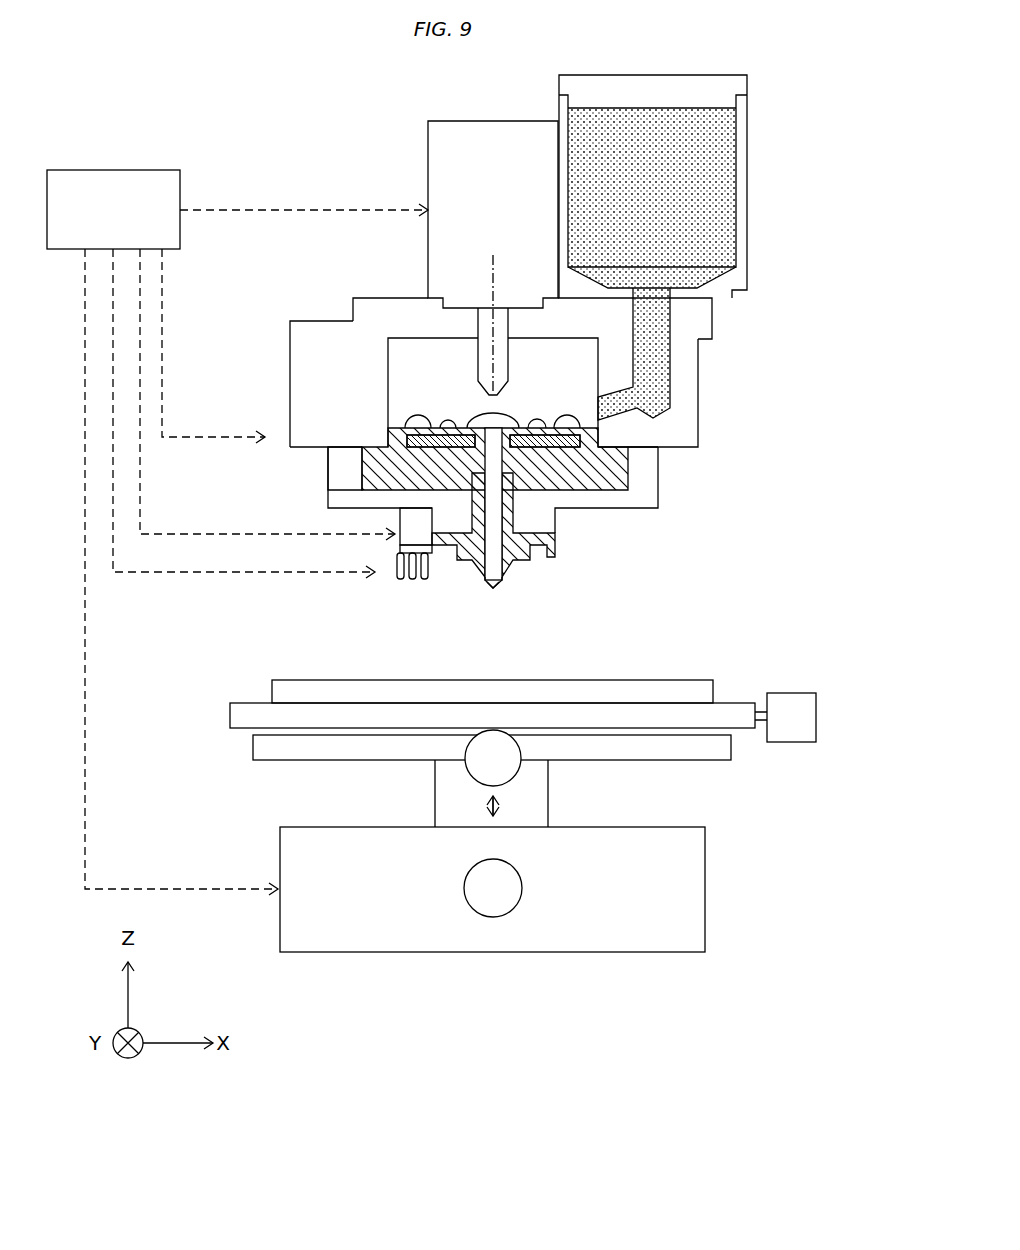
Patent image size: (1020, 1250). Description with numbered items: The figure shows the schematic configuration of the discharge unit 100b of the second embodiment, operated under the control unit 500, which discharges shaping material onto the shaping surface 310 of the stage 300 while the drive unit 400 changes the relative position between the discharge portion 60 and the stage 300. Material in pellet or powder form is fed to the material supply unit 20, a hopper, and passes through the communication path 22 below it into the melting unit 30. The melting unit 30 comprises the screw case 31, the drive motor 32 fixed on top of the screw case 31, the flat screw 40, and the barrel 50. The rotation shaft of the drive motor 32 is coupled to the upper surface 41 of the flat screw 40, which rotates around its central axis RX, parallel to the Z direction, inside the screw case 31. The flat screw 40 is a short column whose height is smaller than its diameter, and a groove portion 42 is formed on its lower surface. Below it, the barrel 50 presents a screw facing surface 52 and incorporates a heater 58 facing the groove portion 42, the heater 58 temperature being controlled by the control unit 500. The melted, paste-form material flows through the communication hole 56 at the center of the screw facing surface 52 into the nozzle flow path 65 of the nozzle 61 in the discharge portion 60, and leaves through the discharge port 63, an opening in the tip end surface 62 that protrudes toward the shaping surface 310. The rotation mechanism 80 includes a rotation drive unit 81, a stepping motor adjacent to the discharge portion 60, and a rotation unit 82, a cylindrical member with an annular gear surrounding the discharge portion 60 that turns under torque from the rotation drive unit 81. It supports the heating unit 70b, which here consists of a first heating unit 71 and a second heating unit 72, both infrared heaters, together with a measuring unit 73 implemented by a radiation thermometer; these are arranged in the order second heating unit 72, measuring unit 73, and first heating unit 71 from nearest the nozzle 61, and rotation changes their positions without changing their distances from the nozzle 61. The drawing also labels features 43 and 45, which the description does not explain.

The discharge unit 100b is at (308, 105).
The control unit 500 is at (110, 170).
The melting unit 30 is at (410, 258).
The drive motor 32 is at (428, 150).
The central axis RX is at (493, 268).
The material supply unit 20 is at (688, 247).
The communication path 22 is at (655, 355).
The screw case 31 is at (395, 317).
The flat screw 40 is at (412, 362).
The upper surface 41 is at (418, 336).
The groove portion 42 is at (462, 424).
The material mound 45 is at (443, 424).
The screw facing surface 52 is at (423, 433).
The support block 43 is at (392, 474).
The heater 58 is at (628, 483).
The barrel 50 is at (460, 444).
The communication hole 56 is at (642, 490).
The discharge portion 60 is at (607, 536).
The nozzle flow path 65 is at (555, 540).
The tip end surface 62 is at (490, 588).
The nozzle 61 is at (510, 580).
The discharge port 63 is at (498, 588).
The rotation mechanism 80 is at (394, 593).
The rotation drive unit 81 is at (400, 535).
The rotation unit 82 is at (436, 548).
The heating unit 70b is at (383, 616).
The first heating unit 71 is at (399, 580).
The second heating unit 72 is at (412, 580).
The measuring unit 73 is at (426, 580).
The shaping surface 310 is at (663, 680).
The stage 300 is at (528, 720).
The drive unit 400 is at (747, 807).